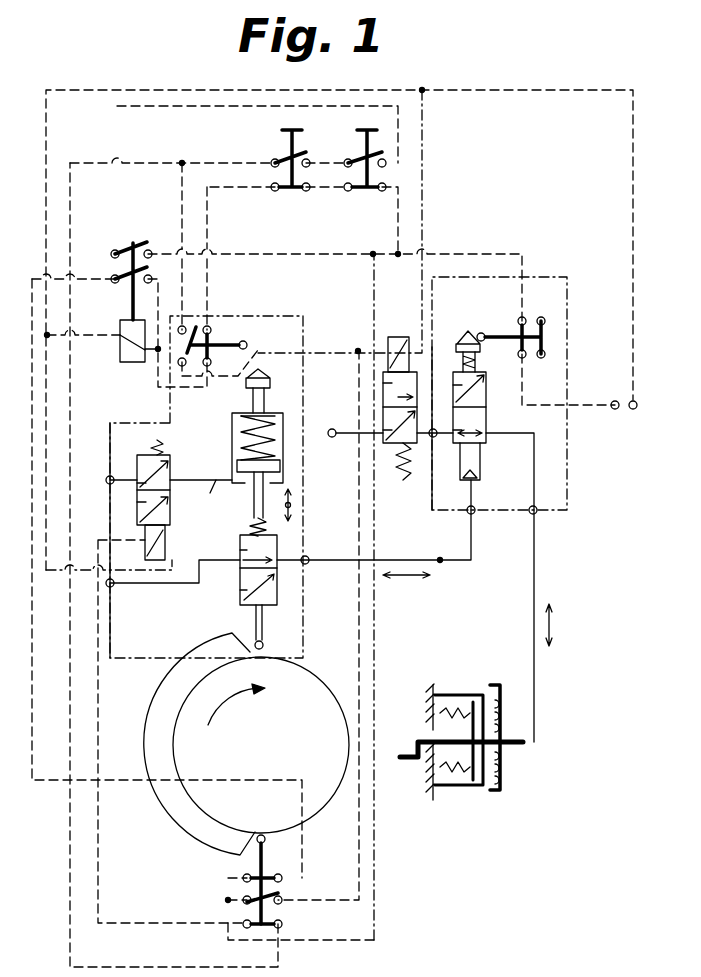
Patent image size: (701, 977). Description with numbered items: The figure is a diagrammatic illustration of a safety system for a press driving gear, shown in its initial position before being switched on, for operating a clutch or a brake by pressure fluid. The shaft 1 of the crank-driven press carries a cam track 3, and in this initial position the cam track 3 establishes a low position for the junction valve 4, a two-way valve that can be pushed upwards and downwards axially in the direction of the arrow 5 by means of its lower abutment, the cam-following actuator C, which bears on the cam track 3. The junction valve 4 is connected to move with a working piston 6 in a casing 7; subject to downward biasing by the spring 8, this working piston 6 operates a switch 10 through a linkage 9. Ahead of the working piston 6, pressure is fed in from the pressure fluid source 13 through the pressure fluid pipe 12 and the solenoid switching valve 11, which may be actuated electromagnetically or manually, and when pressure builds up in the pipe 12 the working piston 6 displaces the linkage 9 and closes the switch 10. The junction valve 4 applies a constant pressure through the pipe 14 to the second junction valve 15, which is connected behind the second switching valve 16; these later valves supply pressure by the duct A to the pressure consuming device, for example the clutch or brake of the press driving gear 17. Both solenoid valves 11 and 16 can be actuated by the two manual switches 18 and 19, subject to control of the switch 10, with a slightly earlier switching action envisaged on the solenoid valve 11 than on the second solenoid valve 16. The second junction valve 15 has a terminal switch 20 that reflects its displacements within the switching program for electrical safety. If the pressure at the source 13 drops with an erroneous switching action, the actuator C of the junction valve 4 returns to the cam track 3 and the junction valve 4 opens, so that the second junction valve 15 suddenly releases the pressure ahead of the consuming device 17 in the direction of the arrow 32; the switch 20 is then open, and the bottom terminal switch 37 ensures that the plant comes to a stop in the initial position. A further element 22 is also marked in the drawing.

The shaft 1 is at (318, 802).
The cam track 3 is at (178, 813).
The junction valve 4 is at (273, 583).
The arrow 5 is at (273, 548).
The working piston 6 is at (237, 463).
The casing 7 is at (231, 432).
The spring 8 is at (272, 441).
The linkage 9 is at (265, 377).
The switch 10 is at (222, 340).
The solenoid switching valve 11 is at (172, 505).
The pressure fluid pipe 12 is at (215, 499).
The pressure fluid source 13 is at (107, 485).
The pipe 14 is at (440, 560).
The second junction valve 15 is at (489, 427).
The second switching valve 16 is at (405, 462).
The press driving gear 17 is at (503, 776).
The manual switch 18 is at (288, 143).
The manual switch 19 is at (365, 143).
The terminal switch 20 is at (522, 330).
The valve stem 22 is at (453, 388).
The arrow 32 is at (553, 625).
The bottom terminal switch 37 is at (245, 895).
The duct A is at (535, 478).
The cam-following actuator C is at (264, 629).